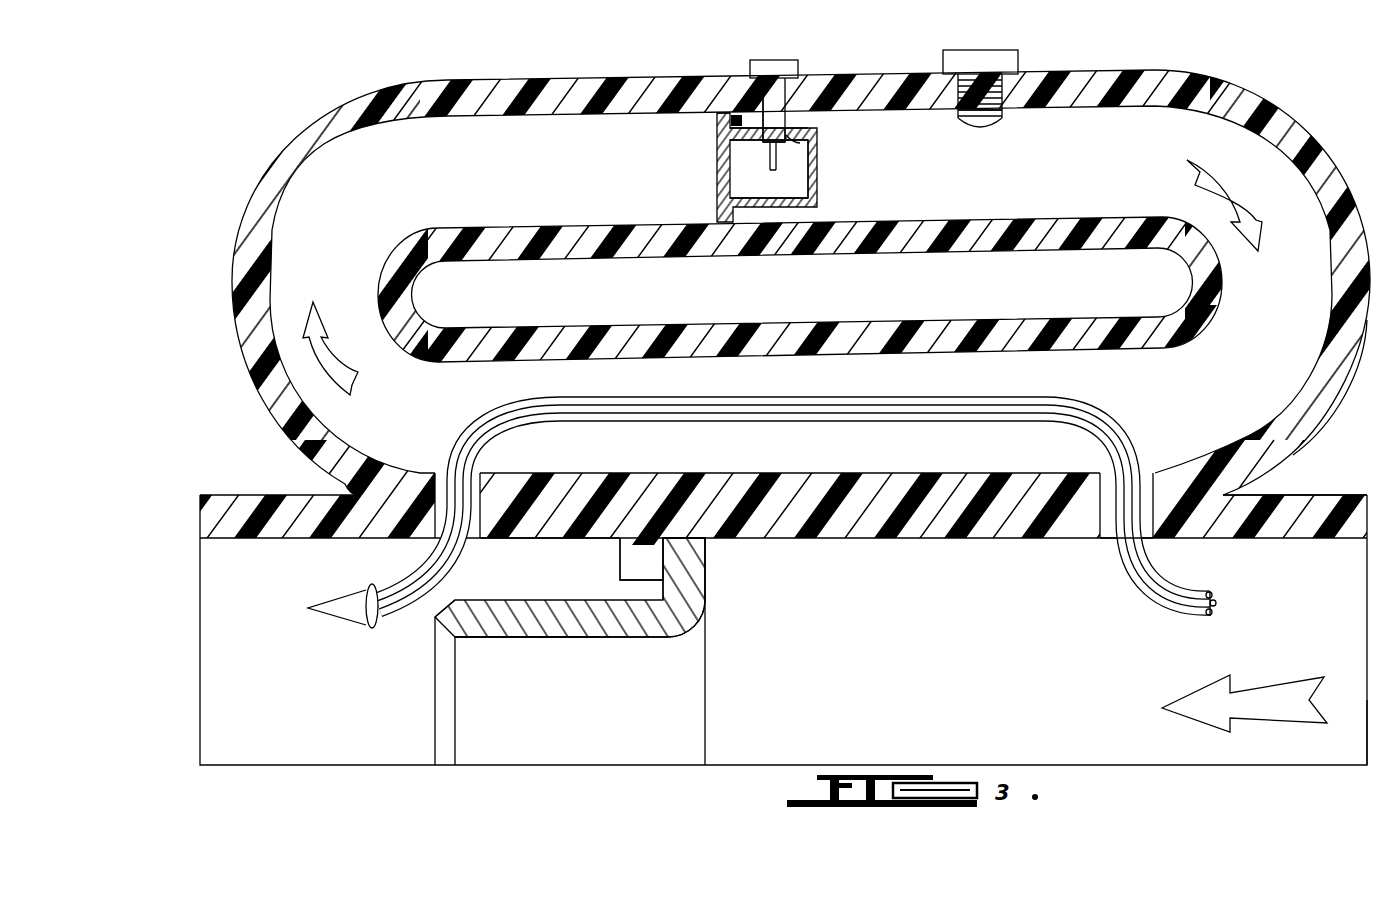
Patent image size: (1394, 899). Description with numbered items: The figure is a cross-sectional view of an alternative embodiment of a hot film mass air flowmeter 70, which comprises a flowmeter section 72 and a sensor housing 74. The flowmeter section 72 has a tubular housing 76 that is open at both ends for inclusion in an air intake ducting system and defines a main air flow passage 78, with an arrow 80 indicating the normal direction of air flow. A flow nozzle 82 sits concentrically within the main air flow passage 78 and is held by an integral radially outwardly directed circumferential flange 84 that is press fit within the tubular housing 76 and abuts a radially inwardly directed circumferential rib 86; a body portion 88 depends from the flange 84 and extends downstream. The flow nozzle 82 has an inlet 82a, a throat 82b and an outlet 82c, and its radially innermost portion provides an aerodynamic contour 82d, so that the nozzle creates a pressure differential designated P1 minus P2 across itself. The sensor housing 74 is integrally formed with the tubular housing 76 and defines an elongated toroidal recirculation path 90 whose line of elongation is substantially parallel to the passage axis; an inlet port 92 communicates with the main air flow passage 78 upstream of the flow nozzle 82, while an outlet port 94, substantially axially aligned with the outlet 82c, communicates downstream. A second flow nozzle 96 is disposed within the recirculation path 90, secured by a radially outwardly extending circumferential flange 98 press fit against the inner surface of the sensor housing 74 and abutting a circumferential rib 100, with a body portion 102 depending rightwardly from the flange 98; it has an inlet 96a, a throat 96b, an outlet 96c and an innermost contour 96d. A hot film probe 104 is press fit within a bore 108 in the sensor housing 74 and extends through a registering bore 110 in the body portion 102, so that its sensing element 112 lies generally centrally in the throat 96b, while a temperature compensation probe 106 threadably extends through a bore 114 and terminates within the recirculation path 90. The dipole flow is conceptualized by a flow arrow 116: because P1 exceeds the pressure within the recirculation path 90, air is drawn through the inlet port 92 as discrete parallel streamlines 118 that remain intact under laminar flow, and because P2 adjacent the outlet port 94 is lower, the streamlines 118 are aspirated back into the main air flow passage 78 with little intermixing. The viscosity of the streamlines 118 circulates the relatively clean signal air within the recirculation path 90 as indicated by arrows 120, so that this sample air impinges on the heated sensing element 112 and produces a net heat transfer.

The hot film mass air flowmeter 70 is at (313, 113).
The flowmeter section 72 is at (1372, 548).
The sensor housing 74 is at (1322, 138).
The tubular housing 76 is at (1325, 500).
The main air flow passage 78 is at (1358, 745).
The arrow 80 is at (1275, 712).
The flow nozzle 82 is at (545, 728).
The inlet 82a is at (712, 620).
The throat 82b is at (624, 640).
The outlet 82c is at (437, 624).
The aerodynamic contour 82d is at (692, 628).
The circumferential flange 84 is at (695, 562).
The circumferential rib 86 is at (622, 560).
The body portion 88 is at (512, 638).
The recirculation path 90 is at (450, 165).
The inlet port 92 is at (1110, 538).
The outlet port 94 is at (485, 540).
The second flow nozzle 96 is at (800, 168).
The inlet 96a is at (735, 146).
The throat 96b is at (740, 150).
The outlet 96c is at (812, 194).
The contour 96d is at (720, 197).
The circumferential flange 98 is at (718, 121).
The circumferential rib 100 is at (752, 222).
The body portion 102 is at (805, 143).
The hot film probe 104 is at (752, 62).
The temperature compensation probe 106 is at (1020, 60).
The bore 108 is at (782, 92).
The registering bore 110 is at (786, 130).
The sensing element 112 is at (767, 157).
The bore 114 is at (1000, 112).
The flow arrow 116 is at (1097, 403).
The streamlines 118 is at (1210, 592).
The arrows 120 is at (345, 375).
The pressure P1 is at (1095, 634).
The pressure P2 is at (395, 722).